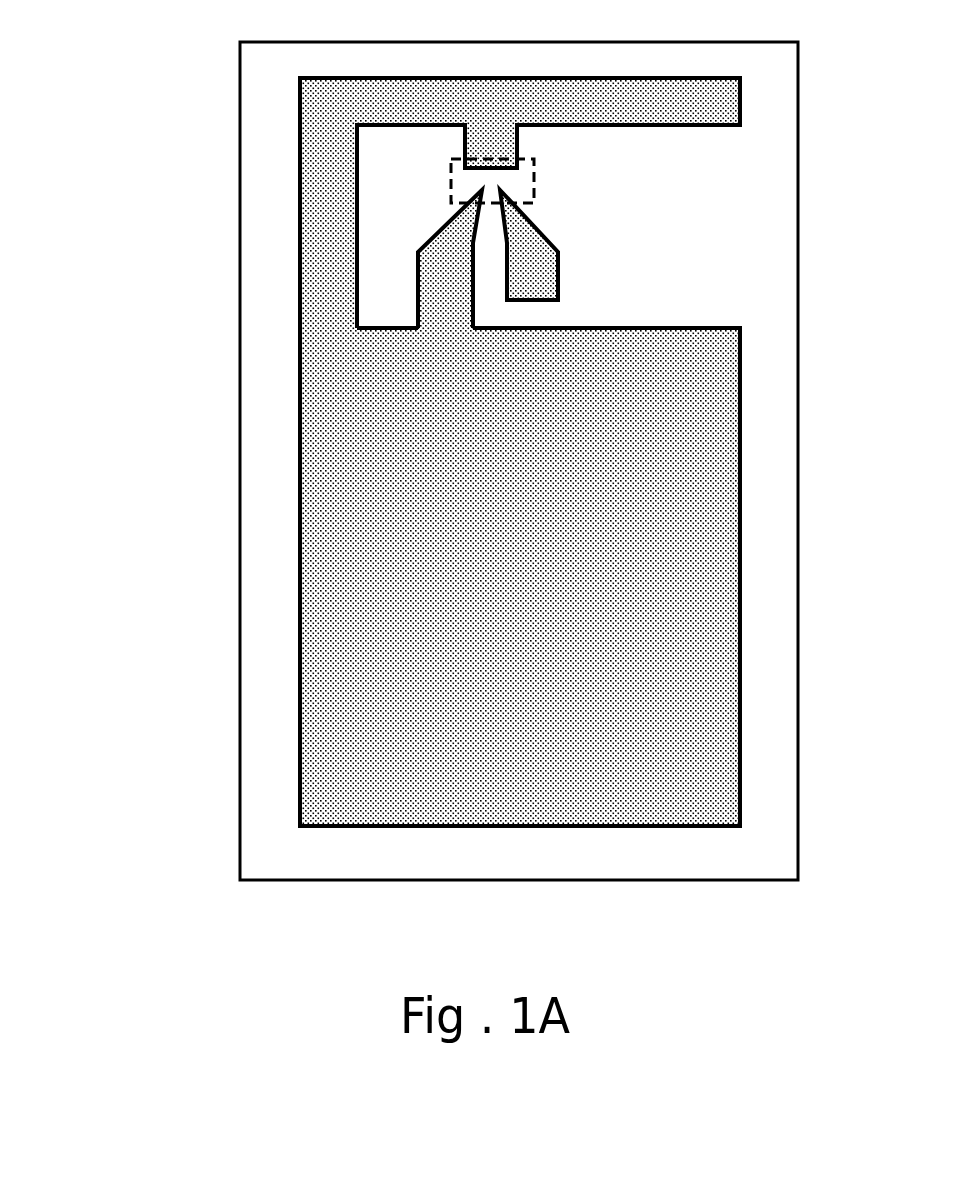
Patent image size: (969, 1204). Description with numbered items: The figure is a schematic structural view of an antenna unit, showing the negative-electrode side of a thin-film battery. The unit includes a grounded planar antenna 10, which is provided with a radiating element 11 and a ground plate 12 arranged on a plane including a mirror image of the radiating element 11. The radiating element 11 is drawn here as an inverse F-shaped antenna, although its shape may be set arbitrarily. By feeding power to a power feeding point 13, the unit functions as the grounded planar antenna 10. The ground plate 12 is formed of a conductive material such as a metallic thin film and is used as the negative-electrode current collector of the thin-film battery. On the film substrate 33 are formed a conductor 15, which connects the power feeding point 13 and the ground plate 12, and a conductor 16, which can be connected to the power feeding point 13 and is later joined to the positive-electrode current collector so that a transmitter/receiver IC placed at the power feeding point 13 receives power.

The grounded planar antenna 10 is at (107, 205).
The radiating element 11 is at (325, 260).
The ground plate 12 is at (325, 417).
The power feeding point 13 is at (537, 172).
The conductor 15 is at (436, 284).
The conductor 16 is at (533, 238).
The film substrate 33 is at (252, 621).